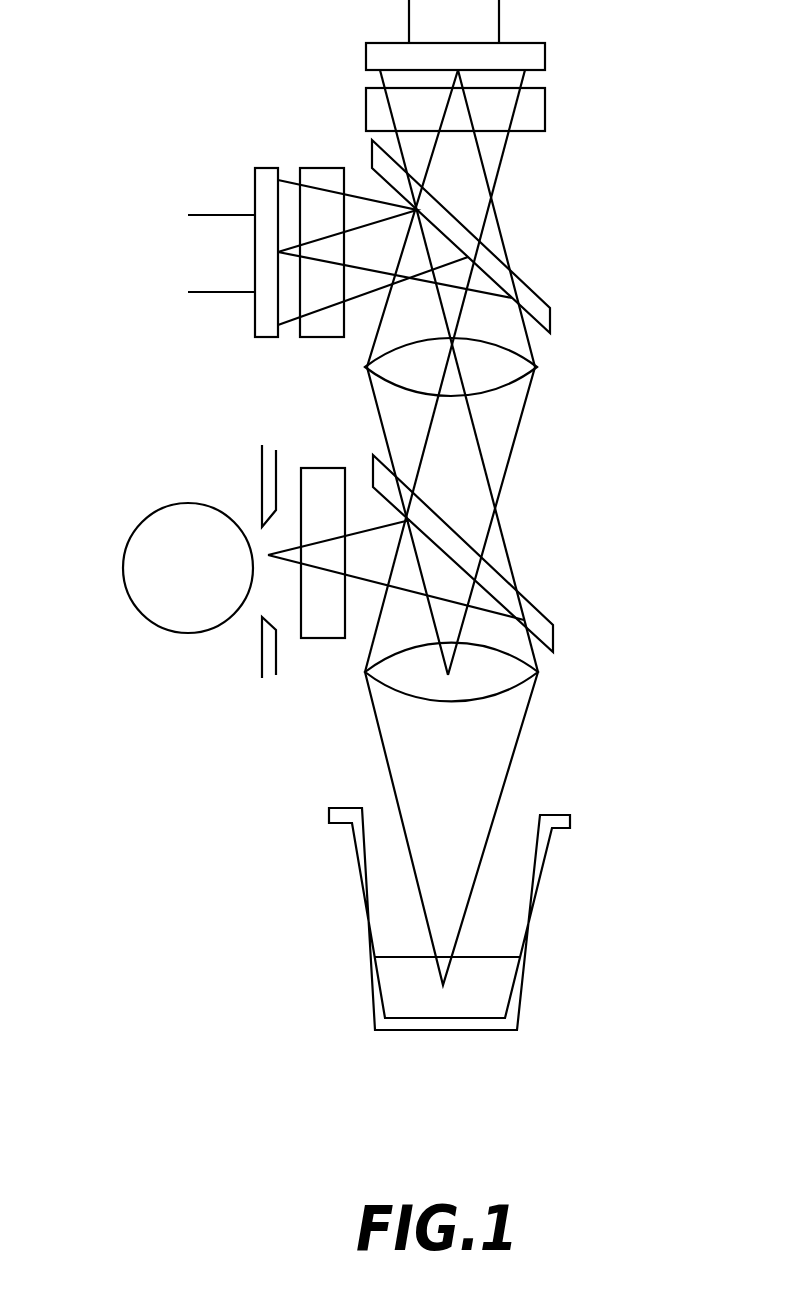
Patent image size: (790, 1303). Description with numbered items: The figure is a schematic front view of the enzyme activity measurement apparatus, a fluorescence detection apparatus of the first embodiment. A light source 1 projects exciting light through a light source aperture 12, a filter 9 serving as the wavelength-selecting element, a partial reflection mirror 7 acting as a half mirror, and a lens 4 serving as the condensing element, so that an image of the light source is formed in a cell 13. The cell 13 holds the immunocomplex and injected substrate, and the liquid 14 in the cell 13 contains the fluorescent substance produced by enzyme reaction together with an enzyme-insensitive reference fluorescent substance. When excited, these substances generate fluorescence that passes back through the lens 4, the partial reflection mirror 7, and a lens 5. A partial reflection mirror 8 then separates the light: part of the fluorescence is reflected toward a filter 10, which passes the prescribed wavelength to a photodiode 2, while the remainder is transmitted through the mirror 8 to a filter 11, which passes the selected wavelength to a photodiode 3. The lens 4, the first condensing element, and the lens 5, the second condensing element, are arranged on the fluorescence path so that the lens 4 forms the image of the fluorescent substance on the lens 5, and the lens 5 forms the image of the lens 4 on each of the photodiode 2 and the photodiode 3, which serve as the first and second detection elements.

The light source 1 is at (133, 532).
The photodiode 2 is at (270, 168).
The photodiode 3 is at (546, 50).
The lens 4 is at (541, 672).
The lens 5 is at (538, 366).
The partial reflection mirror 7 is at (553, 623).
The partial reflection mirror 8 is at (550, 306).
The filter 9 is at (318, 638).
The filter 10 is at (317, 338).
The filter 11 is at (546, 107).
The light source aperture 12 is at (260, 647).
The cell 13 is at (445, 1032).
The liquid 14 is at (528, 970).